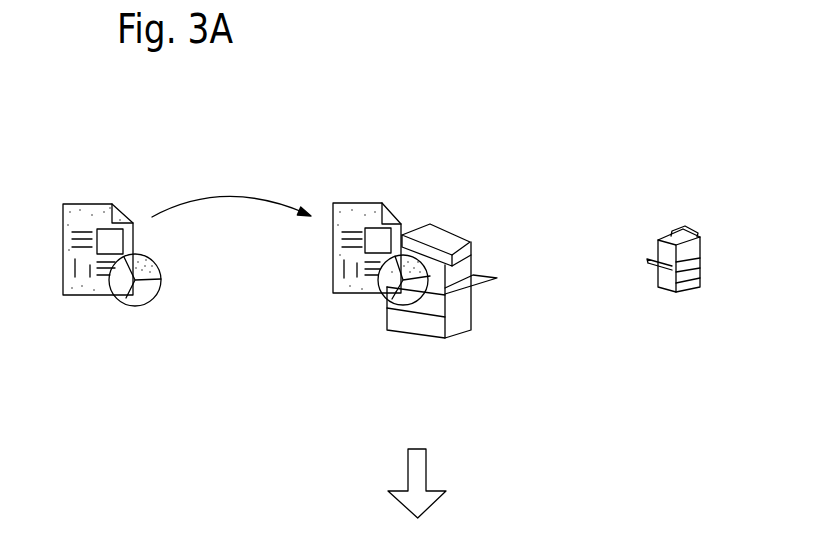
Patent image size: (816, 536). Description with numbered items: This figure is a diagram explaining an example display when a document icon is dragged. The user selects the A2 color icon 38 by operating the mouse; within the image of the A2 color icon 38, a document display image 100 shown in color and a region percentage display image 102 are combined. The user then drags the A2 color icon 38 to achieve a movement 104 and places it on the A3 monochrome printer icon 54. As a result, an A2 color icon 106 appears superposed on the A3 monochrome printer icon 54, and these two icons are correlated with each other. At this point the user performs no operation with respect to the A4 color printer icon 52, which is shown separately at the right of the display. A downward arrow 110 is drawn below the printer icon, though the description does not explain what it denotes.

The A2 color icon 38 is at (63, 268).
The document display image 100 is at (134, 236).
The region percentage display image 102 is at (162, 282).
The movement 104 is at (223, 190).
The A2 color icon 106 is at (367, 202).
The A3 monochrome printer icon 54 is at (401, 332).
The A4 color printer icon 52 is at (662, 287).
The process flow arrow 110 is at (496, 492).